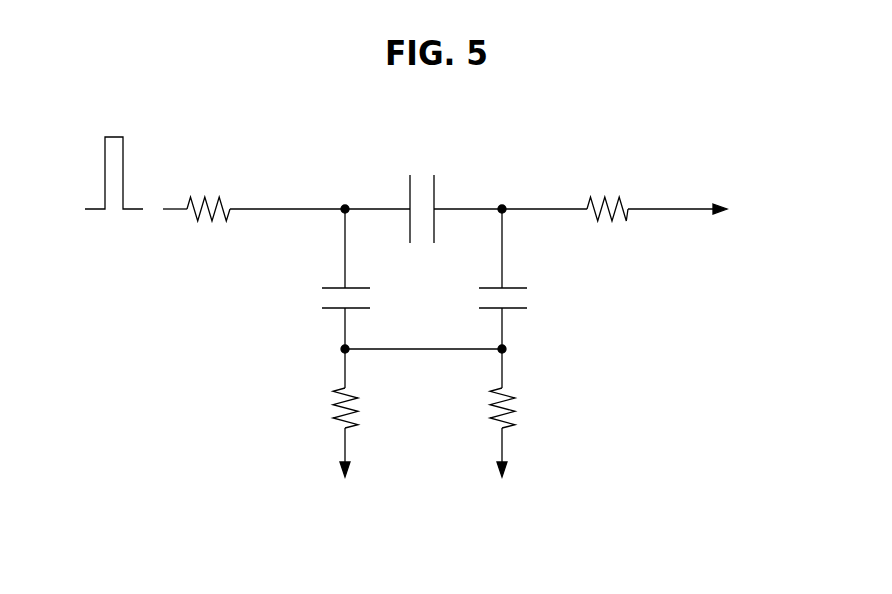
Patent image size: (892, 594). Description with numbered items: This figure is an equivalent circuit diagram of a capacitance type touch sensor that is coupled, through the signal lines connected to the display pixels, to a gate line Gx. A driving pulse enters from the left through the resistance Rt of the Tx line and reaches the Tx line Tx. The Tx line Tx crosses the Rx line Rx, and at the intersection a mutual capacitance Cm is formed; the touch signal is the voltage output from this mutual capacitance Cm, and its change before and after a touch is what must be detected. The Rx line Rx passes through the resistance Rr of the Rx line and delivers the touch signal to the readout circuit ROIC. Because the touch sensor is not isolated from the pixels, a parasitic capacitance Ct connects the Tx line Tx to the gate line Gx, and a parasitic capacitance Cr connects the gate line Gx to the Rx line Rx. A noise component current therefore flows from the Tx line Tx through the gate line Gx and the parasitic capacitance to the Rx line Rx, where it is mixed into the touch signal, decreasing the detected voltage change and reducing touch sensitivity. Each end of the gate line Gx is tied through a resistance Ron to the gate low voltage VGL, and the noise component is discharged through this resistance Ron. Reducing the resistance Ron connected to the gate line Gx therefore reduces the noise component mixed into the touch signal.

The resistance of the Tx line Rt is at (208, 194).
The Tx line Tx is at (283, 208).
The mutual capacitance Cm is at (423, 194).
The Rx line Rx is at (550, 208).
The resistance of the Rx line Rr is at (607, 194).
The readout integrated circuit ROIC is at (705, 209).
The parasitic capacitance connected to the Tx line Ct is at (360, 279).
The parasitic capacitance connected to the Rx line Cr is at (518, 279).
The gate line Gx is at (423, 336).
The resistance connected to the gate line Ron is at (445, 388).
The gate low voltage VGL is at (425, 468).